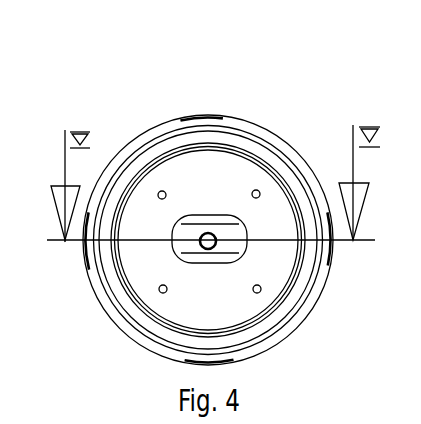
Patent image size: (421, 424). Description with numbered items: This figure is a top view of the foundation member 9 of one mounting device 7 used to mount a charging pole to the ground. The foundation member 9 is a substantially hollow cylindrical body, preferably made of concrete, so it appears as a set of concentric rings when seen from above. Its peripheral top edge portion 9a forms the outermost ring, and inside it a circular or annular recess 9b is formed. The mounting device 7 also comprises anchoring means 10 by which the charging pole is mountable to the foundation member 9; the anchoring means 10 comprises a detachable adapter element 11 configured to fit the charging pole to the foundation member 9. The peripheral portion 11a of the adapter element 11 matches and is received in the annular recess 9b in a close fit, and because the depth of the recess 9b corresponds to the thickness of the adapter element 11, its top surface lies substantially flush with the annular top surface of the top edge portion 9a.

The mounting device 7 is at (128, 359).
The foundation member 9 is at (208, 196).
The peripheral top edge portion 9a is at (145, 139).
The annular recess 9b is at (173, 134).
The anchoring means 10 is at (199, 165).
The detachable adapter element 11 is at (212, 172).
The peripheral portion 11a is at (223, 151).